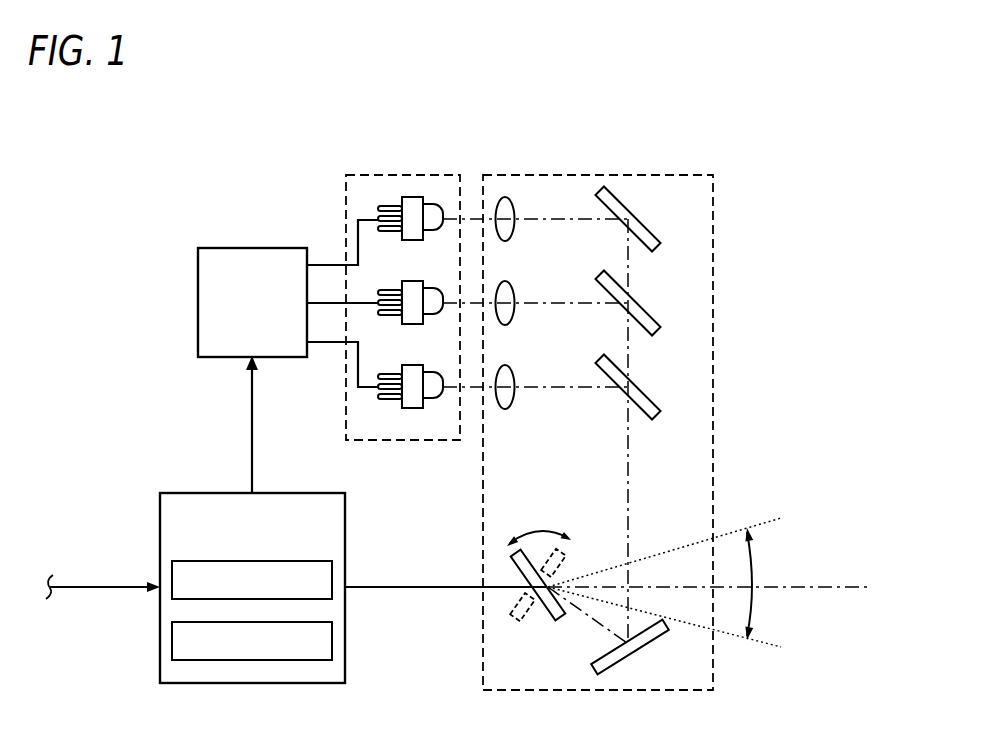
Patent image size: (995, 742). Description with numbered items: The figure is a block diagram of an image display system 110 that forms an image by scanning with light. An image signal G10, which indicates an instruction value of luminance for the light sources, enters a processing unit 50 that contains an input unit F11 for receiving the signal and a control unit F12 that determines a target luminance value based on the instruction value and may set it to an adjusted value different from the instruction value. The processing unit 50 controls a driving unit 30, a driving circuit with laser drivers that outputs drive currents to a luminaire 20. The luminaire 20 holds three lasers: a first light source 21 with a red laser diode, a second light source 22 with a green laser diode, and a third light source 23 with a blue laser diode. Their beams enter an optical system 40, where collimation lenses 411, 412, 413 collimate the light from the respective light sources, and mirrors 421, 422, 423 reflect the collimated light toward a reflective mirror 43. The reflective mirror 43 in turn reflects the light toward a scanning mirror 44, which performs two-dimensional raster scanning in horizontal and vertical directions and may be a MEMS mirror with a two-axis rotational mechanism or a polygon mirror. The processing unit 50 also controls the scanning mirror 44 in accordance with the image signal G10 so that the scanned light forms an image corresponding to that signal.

The image display system 110 is at (146, 198).
The luminaire 20 is at (436, 174).
The first light source 21 is at (408, 238).
The second light source 22 is at (408, 321).
The third light source 23 is at (408, 402).
The driving unit 30 is at (283, 253).
The optical system 40 is at (676, 174).
The collimation lens 411 is at (509, 211).
The collimation lens 412 is at (508, 294).
The collimation lens 413 is at (508, 379).
The mirror 421 is at (647, 222).
The mirror 422 is at (643, 306).
The mirror 423 is at (643, 391).
The reflective mirror 43 is at (647, 643).
The scanning mirror 44 is at (553, 618).
The processing unit 50 is at (293, 502).
The input unit F11 is at (324, 573).
The control unit F12 is at (328, 640).
The image signal G10 is at (103, 578).